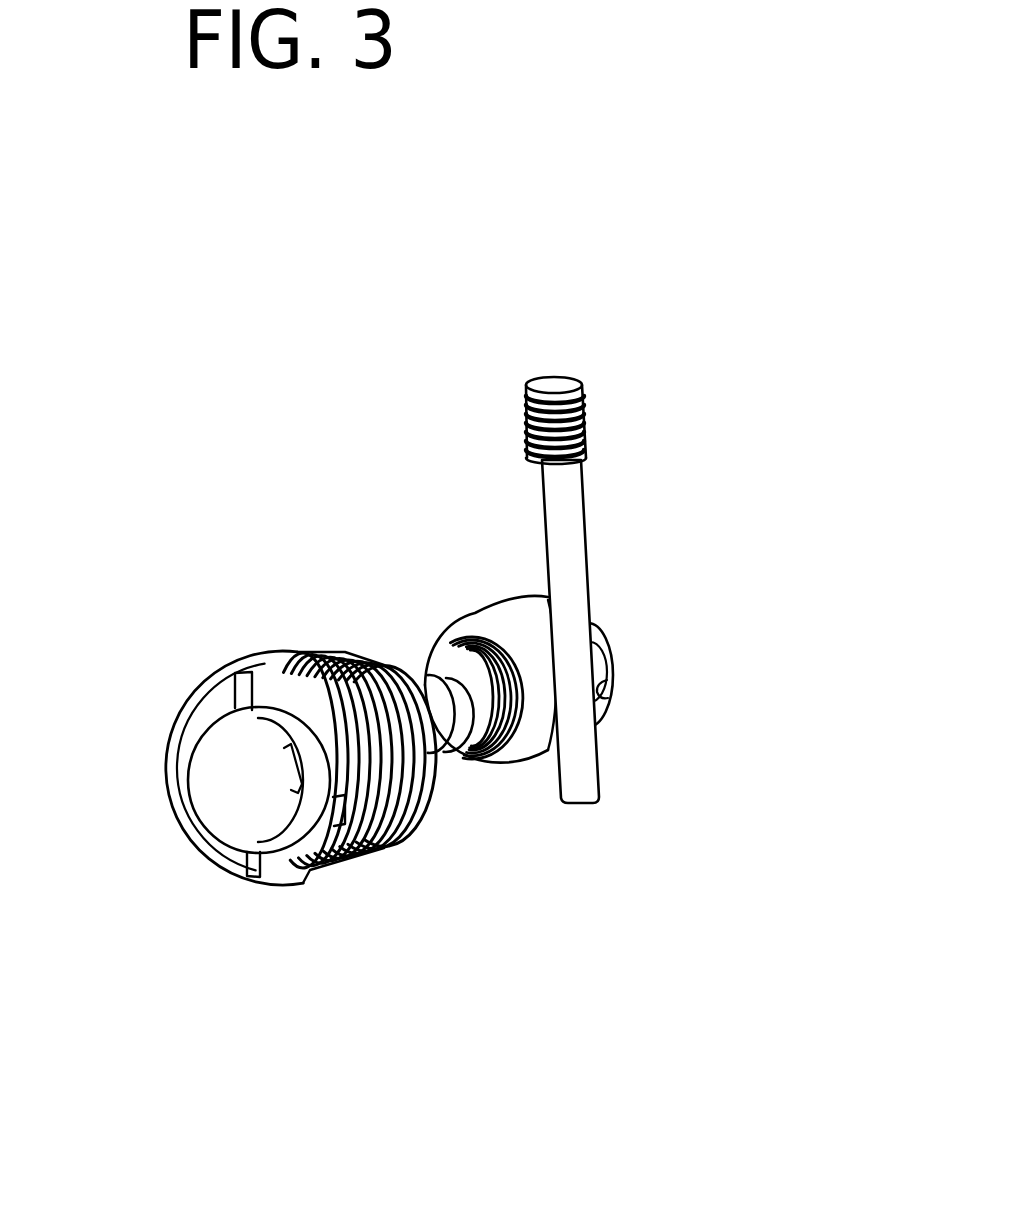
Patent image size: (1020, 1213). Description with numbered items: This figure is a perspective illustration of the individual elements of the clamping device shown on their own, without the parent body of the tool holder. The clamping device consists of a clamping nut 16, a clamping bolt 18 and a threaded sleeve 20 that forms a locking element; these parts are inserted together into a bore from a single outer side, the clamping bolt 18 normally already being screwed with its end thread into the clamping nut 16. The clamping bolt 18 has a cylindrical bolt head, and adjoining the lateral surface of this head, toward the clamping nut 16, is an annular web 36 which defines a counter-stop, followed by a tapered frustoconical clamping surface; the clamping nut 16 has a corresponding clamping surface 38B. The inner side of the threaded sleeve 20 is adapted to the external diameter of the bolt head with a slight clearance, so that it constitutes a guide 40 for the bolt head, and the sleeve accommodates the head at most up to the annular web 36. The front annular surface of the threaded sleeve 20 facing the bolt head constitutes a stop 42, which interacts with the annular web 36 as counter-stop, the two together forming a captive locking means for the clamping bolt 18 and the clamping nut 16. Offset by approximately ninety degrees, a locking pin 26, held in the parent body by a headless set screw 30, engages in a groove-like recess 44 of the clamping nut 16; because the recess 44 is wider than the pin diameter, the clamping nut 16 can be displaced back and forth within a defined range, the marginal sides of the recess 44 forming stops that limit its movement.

The clamping nut 16 is at (493, 605).
The clamping bolt 18 is at (398, 655).
The threaded sleeve 20 is at (317, 872).
The locking pin 26 is at (573, 520).
The headless set screw 30 is at (590, 420).
The annular web 36 is at (418, 765).
The clamping surface 38B is at (520, 748).
The guide 40 is at (220, 803).
The stop 42 is at (330, 660).
The groove-like recess 44 is at (606, 700).